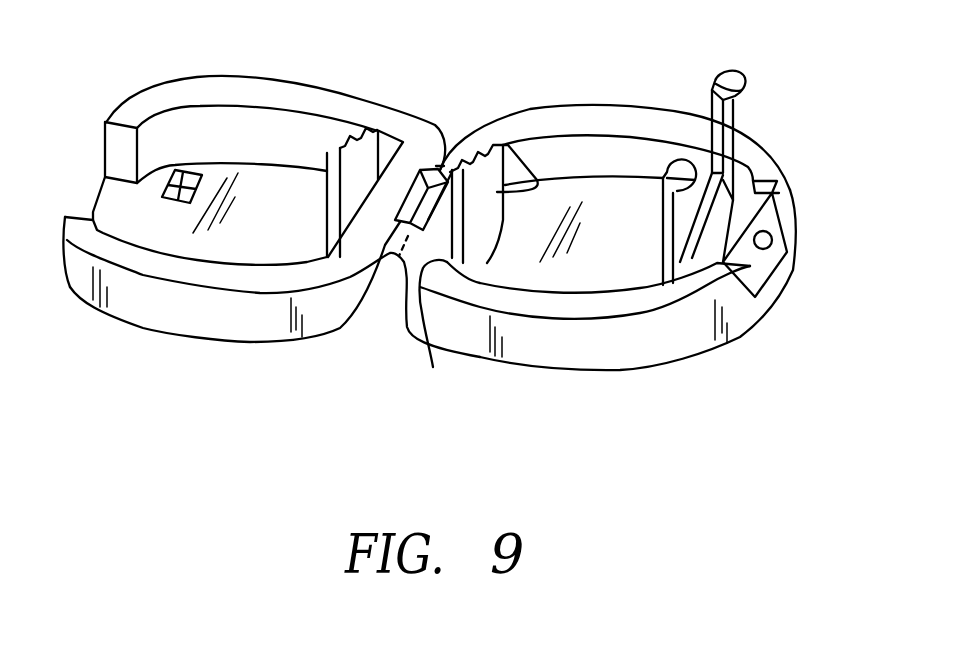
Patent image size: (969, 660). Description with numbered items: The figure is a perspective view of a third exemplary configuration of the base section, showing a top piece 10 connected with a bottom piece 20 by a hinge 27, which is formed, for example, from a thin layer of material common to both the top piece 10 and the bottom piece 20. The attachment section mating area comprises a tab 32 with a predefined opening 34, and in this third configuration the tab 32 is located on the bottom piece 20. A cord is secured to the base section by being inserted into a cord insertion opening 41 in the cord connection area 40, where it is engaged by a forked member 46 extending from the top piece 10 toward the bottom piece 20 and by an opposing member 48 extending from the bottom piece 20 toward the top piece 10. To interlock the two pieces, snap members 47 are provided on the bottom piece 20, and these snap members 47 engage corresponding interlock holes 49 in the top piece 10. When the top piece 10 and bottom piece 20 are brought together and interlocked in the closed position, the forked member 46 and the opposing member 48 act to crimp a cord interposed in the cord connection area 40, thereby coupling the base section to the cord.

The top piece 10 is at (150, 307).
The bottom piece 20 is at (593, 350).
The hinge 27 is at (440, 170).
The tab 32 is at (775, 222).
The predefined opening 34 is at (763, 247).
The cord connection area 40 is at (433, 367).
The cord insertion opening 41 is at (340, 328).
The forked member 46 is at (355, 178).
The snap members 47 is at (727, 68).
The opposing member 48 is at (507, 144).
The interlock holes 49 is at (180, 193).